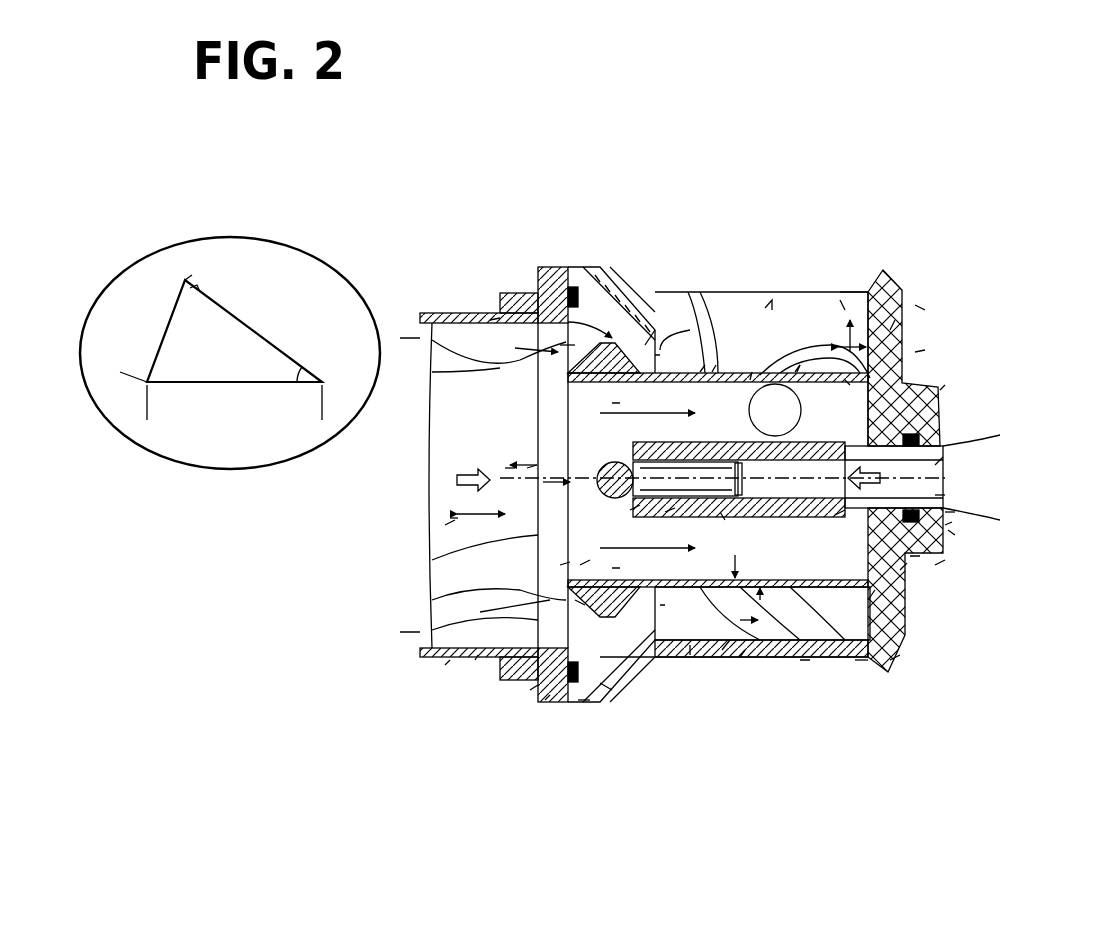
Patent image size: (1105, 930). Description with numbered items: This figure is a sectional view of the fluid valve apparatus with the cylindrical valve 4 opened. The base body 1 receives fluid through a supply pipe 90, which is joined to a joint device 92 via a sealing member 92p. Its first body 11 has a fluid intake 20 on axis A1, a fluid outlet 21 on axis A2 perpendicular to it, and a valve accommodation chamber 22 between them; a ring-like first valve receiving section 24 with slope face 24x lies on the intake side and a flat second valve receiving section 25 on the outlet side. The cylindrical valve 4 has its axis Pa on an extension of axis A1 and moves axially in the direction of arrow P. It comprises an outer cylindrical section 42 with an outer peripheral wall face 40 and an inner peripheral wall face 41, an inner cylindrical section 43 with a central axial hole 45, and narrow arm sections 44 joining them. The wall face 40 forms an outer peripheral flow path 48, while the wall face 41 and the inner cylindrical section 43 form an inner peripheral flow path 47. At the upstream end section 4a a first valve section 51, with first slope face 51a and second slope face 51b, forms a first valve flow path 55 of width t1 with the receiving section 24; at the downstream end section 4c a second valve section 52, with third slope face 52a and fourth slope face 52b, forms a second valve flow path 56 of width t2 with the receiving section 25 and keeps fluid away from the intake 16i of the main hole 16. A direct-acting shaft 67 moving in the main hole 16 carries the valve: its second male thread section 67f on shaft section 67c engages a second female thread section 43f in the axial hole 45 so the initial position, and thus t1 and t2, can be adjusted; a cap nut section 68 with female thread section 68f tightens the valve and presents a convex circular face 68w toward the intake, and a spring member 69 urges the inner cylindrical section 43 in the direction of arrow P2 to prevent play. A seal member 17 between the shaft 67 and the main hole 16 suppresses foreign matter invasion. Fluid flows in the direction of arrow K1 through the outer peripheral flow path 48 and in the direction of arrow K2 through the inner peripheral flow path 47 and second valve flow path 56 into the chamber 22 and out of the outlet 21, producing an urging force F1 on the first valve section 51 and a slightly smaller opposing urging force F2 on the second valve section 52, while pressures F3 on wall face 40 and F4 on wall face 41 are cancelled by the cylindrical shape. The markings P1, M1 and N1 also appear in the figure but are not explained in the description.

The base body 1 is at (952, 522).
The cylindrical valve 4 is at (655, 330).
The end section (upstream side) of the cylindrical valve 4a is at (580, 565).
The other end section (downstream side) of the cylindrical valve 4c is at (945, 560).
The first body 11 is at (955, 512).
The main hole 16 is at (950, 450).
The intake of the main hole 16i is at (943, 457).
The seal member 17 is at (945, 385).
The fluid intake 20 is at (445, 373).
The fluid outlet 21 is at (797, 372).
The valve accommodation chamber 22 is at (900, 655).
The first valve receiving section 24 is at (570, 295).
The slope face of the first valve receiving section 24x is at (600, 683).
The second valve receiving section 25 is at (925, 350).
The outer peripheral wall face 40 is at (737, 380).
The inner peripheral wall face 41 is at (712, 372).
The outer cylindrical section 42 is at (700, 372).
The inner cylindrical section 43 is at (795, 372).
The second female thread section 43f is at (835, 515).
The arm sections 44 is at (832, 725).
The axial hole 45 is at (945, 495).
The inner peripheral flow path 47 is at (640, 482).
The outer peripheral flow path 48 is at (683, 484).
The first valve section 51 is at (566, 343).
The first slope face 51a is at (480, 612).
The second slope face 51b is at (583, 700).
The second valve section 52 is at (848, 305).
The third slope face 52a is at (858, 660).
The fourth slope face 52b is at (875, 590).
The first valve flow path 55 is at (548, 275).
The second valve flow path 56 is at (925, 310).
The direct-acting shaft 67 is at (943, 488).
The shaft section 67c is at (630, 510).
The second male thread section 67f is at (665, 512).
The cap nut section 68 is at (600, 470).
The female thread section 68f is at (648, 458).
The convex circular face 68w is at (496, 532).
The spring member 69 is at (850, 385).
The supply pipe 90 is at (445, 665).
The joint device 92 is at (530, 690).
The sealing member 92p is at (545, 700).
The axis of the fluid intake A1 is at (508, 470).
The axis of the fluid outlet A2 is at (768, 305).
The urging force F1 is at (450, 482).
The urging force F2 is at (945, 478).
The pressure F3 is at (722, 650).
The pressure F4 is at (745, 575).
The arrow (fluid flow direction) K1 is at (490, 320).
The arrow (fluid flow direction) K2 is at (840, 300).
The arrow (axial direction) P is at (445, 525).
The pressure point P1 is at (450, 518).
The arrow (axial direction) P2 is at (527, 468).
The axis of the cylindrical valve Pa is at (775, 410).
The flow path width t1 is at (690, 655).
The flow path width t2 is at (895, 320).
The dimension M1 is at (147, 412).
The dimension N1 is at (187, 282).